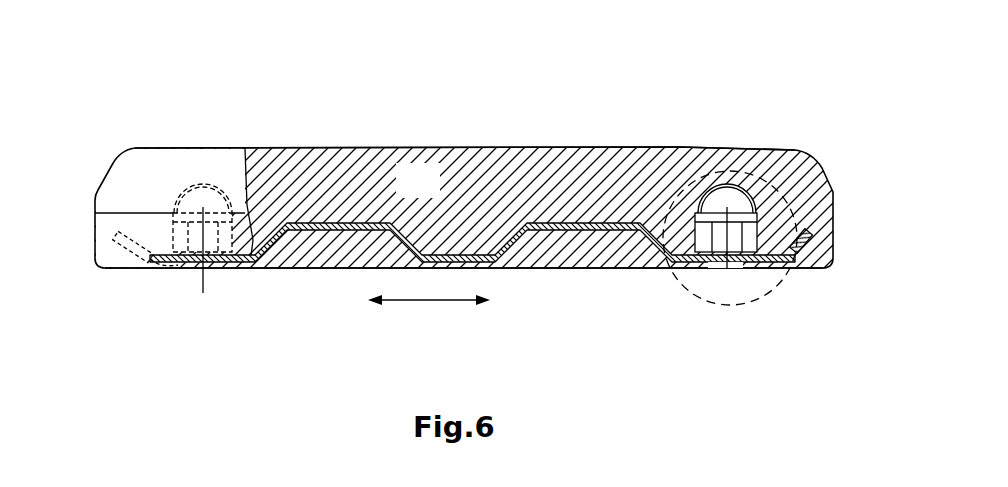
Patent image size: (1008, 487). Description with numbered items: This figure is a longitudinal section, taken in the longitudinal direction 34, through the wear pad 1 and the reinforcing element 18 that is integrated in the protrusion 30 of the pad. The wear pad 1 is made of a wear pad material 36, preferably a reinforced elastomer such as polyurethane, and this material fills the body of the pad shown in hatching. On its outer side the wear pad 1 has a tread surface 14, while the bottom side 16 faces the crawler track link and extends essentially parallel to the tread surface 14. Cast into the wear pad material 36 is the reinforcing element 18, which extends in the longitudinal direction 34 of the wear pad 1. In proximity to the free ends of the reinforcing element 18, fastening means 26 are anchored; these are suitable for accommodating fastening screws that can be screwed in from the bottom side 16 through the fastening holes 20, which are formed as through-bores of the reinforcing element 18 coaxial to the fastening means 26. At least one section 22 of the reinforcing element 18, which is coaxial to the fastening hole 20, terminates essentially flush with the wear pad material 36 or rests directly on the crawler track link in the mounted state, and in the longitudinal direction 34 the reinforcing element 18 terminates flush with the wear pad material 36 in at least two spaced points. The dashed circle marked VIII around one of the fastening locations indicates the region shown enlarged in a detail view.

The wear pad 1 is at (310, 134).
The tread surface 14 is at (541, 147).
The bottom side 16 is at (150, 214).
The reinforcing element 18 is at (500, 262).
The fastening hole 20 is at (215, 276).
The section of the reinforcing element 22 is at (230, 273).
The fastening means 26 is at (195, 268).
The protrusion 30 is at (103, 247).
The longitudinal direction 34 is at (427, 301).
The wear pad material 36 is at (434, 194).
The detail view VIII is at (797, 292).